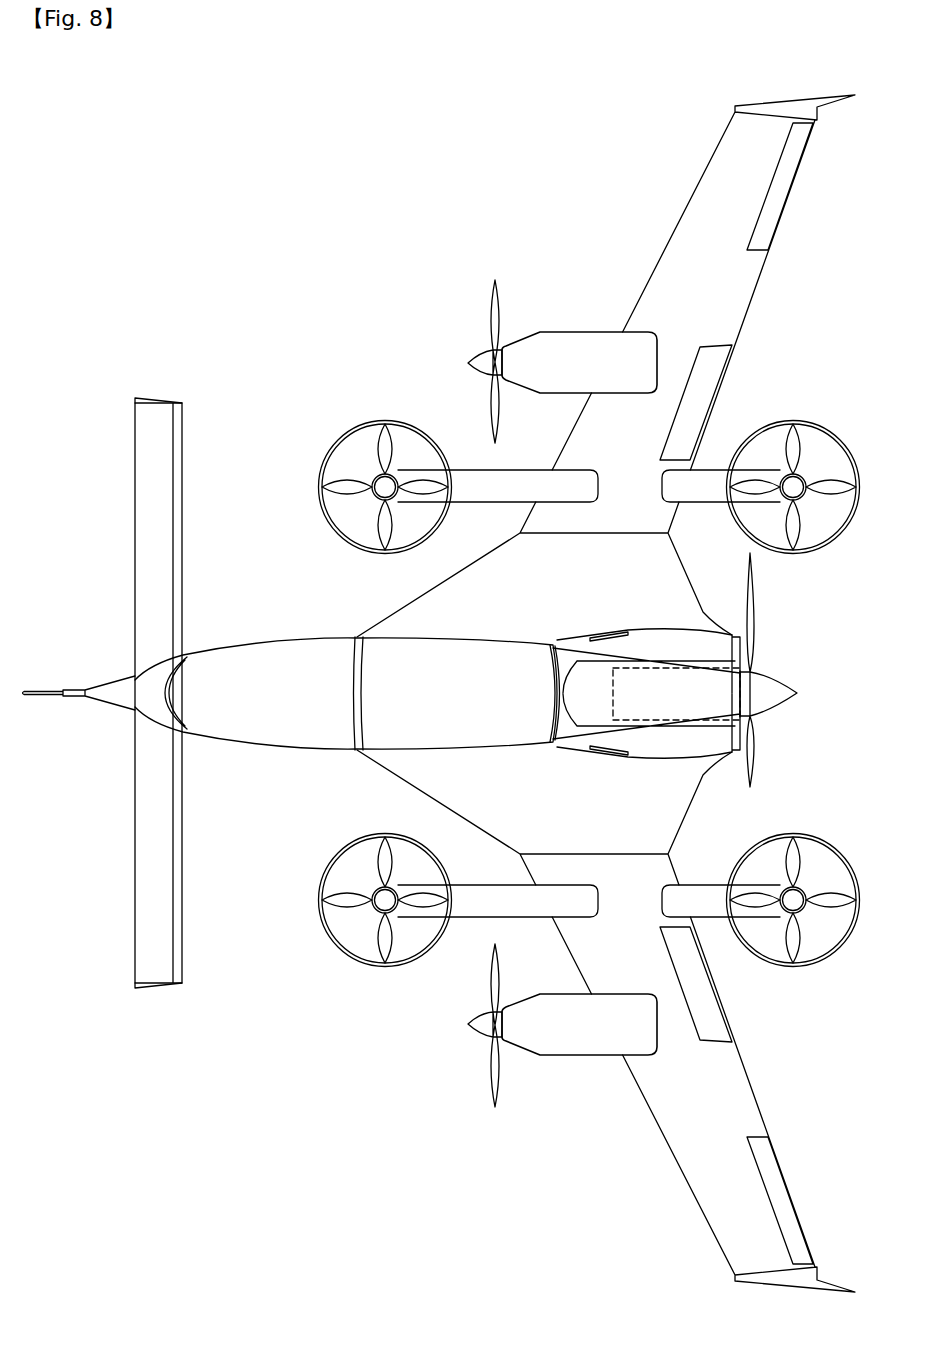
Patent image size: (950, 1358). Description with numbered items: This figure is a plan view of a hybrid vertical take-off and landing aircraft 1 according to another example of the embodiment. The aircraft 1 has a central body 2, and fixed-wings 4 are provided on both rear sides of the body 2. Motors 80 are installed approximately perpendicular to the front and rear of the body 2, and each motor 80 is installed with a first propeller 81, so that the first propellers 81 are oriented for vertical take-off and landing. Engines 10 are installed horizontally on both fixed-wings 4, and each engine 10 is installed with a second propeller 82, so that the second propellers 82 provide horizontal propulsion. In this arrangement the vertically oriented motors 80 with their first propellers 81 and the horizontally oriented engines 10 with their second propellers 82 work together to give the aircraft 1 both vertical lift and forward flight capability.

The aircraft 1 is at (90, 270).
The body 2 is at (262, 730).
The fixed-wing 4 is at (687, 1127).
The engine 10 is at (572, 330).
The motor 80 is at (438, 473).
The first propeller 81 is at (383, 437).
The second propeller 82 is at (490, 322).